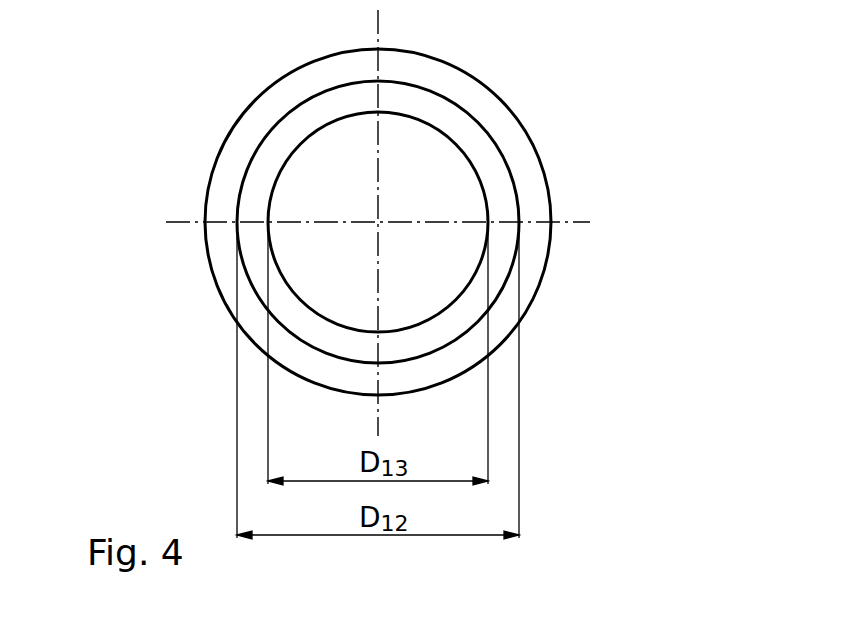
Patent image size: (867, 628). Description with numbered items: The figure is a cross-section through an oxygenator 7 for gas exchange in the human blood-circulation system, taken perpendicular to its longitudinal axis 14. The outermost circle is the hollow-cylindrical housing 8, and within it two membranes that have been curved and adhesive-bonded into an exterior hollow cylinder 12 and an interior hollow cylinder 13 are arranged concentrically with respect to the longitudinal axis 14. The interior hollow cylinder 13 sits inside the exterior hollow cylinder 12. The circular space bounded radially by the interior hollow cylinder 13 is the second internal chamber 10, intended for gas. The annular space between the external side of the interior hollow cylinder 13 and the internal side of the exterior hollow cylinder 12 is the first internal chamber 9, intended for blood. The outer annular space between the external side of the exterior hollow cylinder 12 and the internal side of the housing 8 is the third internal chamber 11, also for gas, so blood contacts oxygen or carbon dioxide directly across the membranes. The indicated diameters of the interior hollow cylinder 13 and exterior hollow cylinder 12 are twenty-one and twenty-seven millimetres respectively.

The oxygenator 7 is at (545, 142).
The housing 8 is at (520, 117).
The first internal chamber 9 is at (245, 216).
The second internal chamber 10 is at (320, 145).
The third internal chamber 11 is at (213, 238).
The exterior hollow cylinder 12 is at (508, 160).
The interior hollow cylinder 13 is at (487, 192).
The longitudinal axis 14 is at (378, 222).